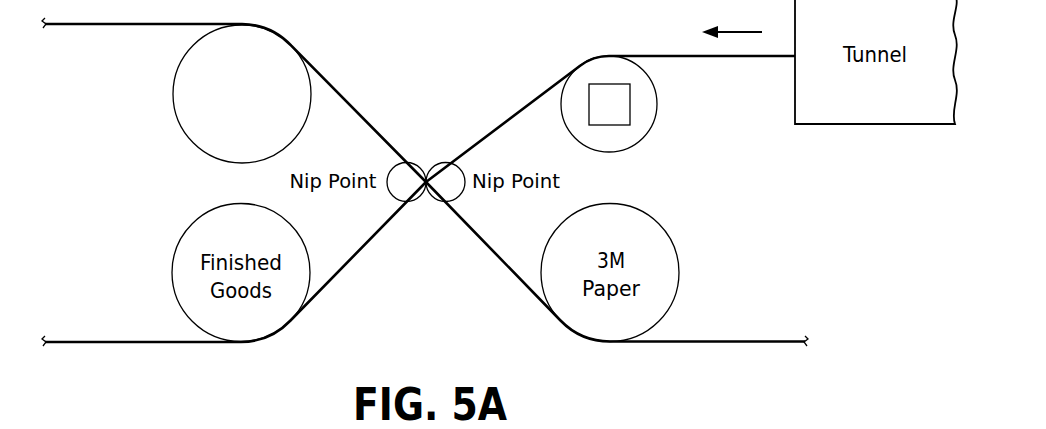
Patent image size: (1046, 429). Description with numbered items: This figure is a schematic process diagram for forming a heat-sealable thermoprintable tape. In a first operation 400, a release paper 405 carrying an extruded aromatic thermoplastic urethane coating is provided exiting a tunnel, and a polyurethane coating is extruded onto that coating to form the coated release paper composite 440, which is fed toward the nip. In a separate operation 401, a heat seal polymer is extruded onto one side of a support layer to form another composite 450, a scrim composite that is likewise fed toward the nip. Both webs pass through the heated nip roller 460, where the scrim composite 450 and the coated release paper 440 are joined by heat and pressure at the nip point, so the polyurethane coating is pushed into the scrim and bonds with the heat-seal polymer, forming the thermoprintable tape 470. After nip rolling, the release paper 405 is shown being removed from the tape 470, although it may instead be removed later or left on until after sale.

The first operation 400 is at (658, 103).
The separate operation 401 is at (173, 94).
The release paper 405 is at (508, 268).
The composite 440 is at (507, 117).
The composite 450 is at (369, 116).
The heated nip roller 460 is at (426, 186).
The thermoprintable tape 470 is at (343, 268).